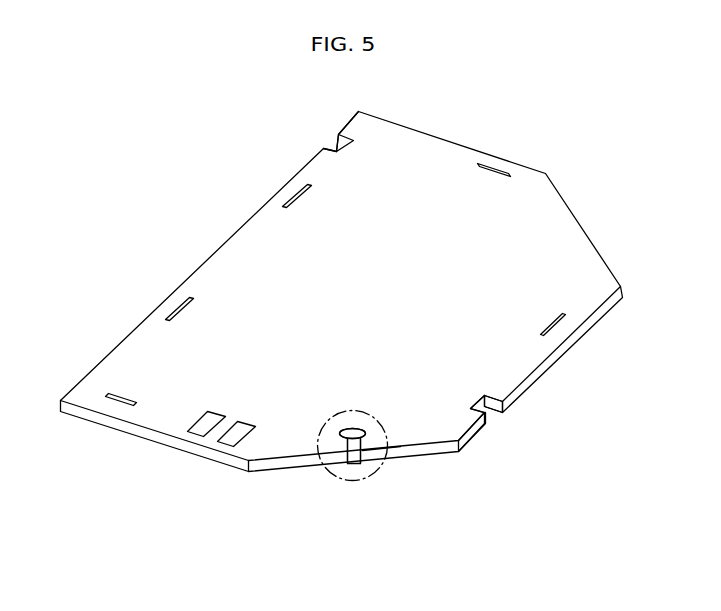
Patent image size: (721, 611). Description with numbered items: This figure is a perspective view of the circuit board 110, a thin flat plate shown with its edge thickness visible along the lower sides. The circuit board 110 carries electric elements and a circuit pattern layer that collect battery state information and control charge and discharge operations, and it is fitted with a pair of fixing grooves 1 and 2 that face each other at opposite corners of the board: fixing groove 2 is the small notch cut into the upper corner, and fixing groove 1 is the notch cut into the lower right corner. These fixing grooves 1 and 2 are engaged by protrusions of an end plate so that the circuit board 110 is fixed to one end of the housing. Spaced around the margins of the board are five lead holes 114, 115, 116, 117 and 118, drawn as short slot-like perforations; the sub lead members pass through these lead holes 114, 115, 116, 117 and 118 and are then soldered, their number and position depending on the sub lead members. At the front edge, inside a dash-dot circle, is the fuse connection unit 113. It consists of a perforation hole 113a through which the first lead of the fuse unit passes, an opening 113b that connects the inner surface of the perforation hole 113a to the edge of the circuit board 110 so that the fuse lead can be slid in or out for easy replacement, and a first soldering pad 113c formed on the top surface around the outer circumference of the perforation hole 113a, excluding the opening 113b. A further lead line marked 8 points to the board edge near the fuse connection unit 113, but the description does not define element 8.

The circuit board 110 is at (555, 235).
The fixing groove 2 is at (340, 152).
The fixing groove 1 is at (502, 412).
The lead hole 114 is at (107, 397).
The lead hole 115 is at (173, 308).
The lead hole 116 is at (291, 189).
The lead hole 117 is at (493, 163).
The lead hole 118 is at (560, 318).
The fuse connection unit 113 is at (324, 474).
The perforation hole 113a is at (358, 442).
The opening 113b is at (348, 457).
The first soldering pad 113c is at (362, 437).
The edge portion 8 is at (375, 453).